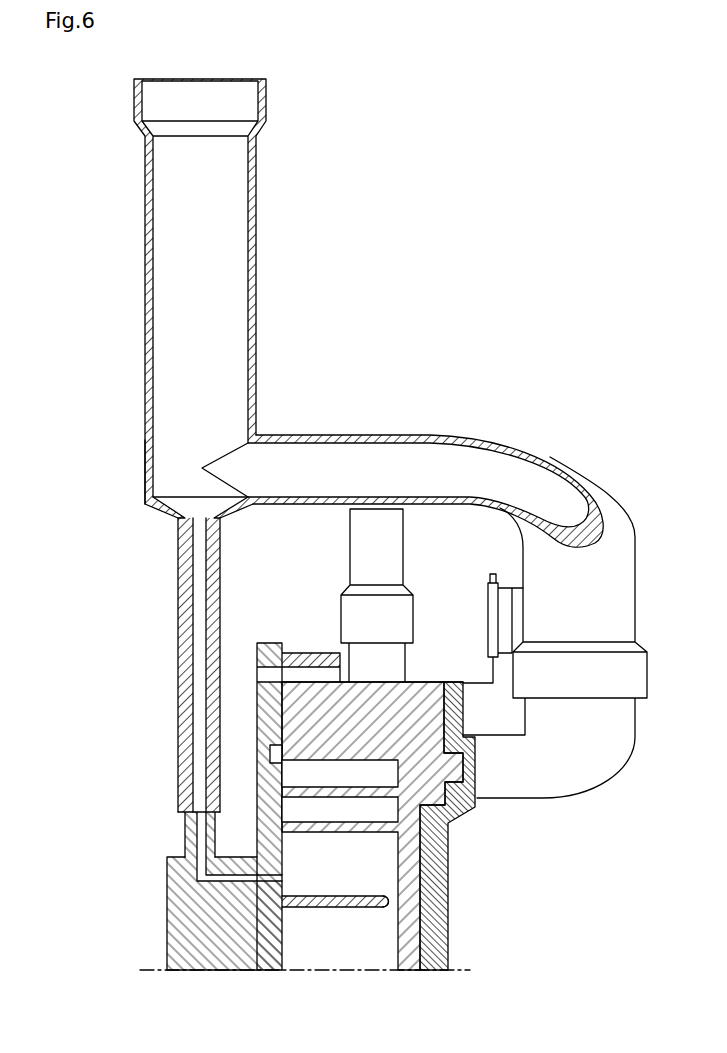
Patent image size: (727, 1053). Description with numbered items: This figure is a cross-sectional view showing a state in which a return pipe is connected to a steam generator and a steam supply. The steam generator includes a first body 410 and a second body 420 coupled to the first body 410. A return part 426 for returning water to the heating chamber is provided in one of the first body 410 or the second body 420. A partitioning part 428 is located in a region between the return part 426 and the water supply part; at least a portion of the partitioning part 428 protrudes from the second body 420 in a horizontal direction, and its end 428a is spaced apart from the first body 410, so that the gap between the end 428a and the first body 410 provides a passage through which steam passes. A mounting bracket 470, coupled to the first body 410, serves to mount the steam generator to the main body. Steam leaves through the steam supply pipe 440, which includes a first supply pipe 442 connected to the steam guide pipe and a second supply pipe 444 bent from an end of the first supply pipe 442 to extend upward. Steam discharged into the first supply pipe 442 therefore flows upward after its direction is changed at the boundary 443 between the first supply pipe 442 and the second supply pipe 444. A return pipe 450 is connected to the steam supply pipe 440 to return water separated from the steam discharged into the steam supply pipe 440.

The first body 410 is at (410, 847).
The second body 420 is at (183, 935).
The return part 426 is at (250, 883).
The partitioning part 428 is at (342, 907).
The end of the partitioning part 428a is at (390, 901).
The steam supply pipe 440 is at (329, 313).
The first supply pipe 442 is at (412, 437).
The boundary 443 is at (148, 470).
The second supply pipe 444 is at (257, 272).
The return pipe 450 is at (185, 668).
The mounting bracket 470 is at (465, 793).